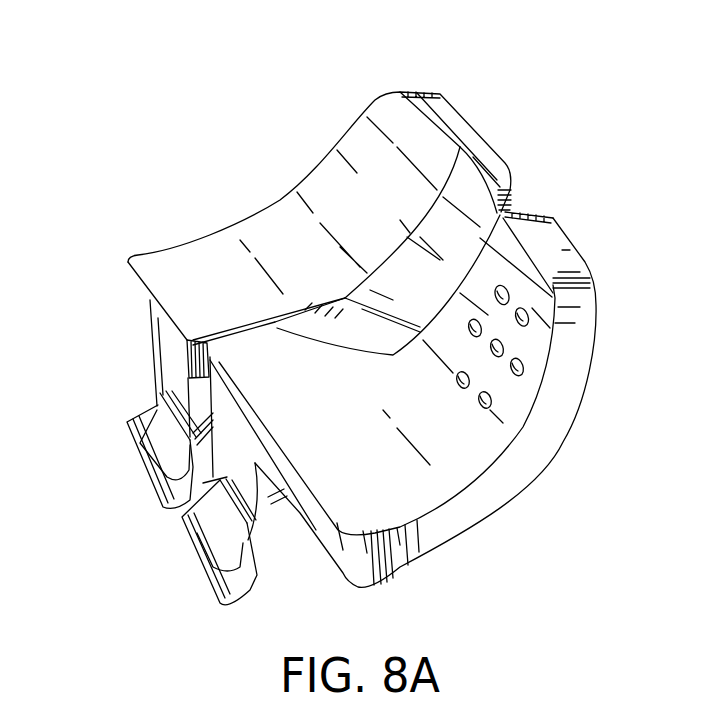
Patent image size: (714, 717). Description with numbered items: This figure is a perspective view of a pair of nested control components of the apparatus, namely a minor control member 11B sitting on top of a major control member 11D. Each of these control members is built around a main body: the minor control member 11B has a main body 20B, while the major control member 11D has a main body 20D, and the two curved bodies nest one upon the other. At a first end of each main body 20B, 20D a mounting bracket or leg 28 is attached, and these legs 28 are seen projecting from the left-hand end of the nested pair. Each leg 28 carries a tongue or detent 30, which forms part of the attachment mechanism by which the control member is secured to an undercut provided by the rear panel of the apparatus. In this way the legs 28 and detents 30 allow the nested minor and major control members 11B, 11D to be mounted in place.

The minor control member 11B is at (359, 186).
The major control member 11D is at (336, 408).
The main body 20B is at (237, 293).
The main body 20D is at (329, 405).
The mounting bracket or leg 28 is at (167, 398).
The tongue or detent 30 is at (136, 450).